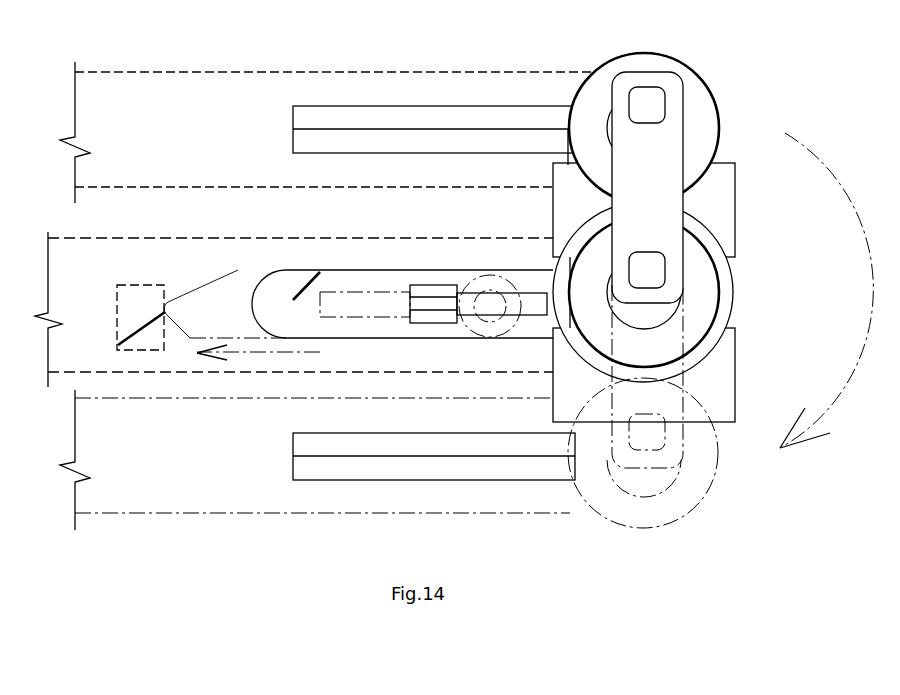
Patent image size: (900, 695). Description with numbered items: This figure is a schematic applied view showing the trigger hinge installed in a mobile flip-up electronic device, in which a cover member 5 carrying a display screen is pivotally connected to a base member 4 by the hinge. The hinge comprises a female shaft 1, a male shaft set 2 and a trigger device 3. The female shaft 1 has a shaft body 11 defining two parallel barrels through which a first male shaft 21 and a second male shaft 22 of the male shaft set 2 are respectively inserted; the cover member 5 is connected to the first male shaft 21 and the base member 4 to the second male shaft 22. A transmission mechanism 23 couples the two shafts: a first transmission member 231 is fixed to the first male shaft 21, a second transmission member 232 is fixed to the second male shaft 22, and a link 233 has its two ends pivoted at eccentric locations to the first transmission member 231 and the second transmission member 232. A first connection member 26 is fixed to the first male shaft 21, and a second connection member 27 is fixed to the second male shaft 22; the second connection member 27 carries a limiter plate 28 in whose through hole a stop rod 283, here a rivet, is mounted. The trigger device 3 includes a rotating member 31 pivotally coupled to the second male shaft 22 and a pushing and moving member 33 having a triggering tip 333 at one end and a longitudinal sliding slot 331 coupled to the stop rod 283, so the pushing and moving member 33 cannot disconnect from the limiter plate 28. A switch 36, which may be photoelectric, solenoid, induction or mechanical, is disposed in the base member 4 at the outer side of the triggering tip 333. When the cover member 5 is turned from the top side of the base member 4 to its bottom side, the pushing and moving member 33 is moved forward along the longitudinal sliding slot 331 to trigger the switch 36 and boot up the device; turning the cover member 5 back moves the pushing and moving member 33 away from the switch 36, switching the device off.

The female shaft 1 is at (675, 292).
The shaft body 11 is at (726, 193).
The male shaft set 2 is at (689, 295).
The first male shaft 21 is at (663, 483).
The second male shaft 22 is at (657, 312).
The transmission mechanism 23 is at (685, 123).
The first transmission member 231 is at (592, 92).
The second transmission member 232 is at (703, 313).
The link 233 is at (632, 82).
The trigger device 3 is at (305, 317).
The rotating member 31 is at (710, 342).
The pushing and moving member 33 is at (257, 320).
The longitudinal sliding slot 331 is at (363, 315).
The triggering tip 333 is at (222, 272).
The switch 36 is at (117, 305).
The second connection member 27 is at (297, 298).
The limiter plate 28 is at (420, 307).
The stop rod 283 is at (500, 275).
The base member 4 is at (195, 237).
The cover member 5 is at (195, 70).
The first connection member 26 is at (405, 116).